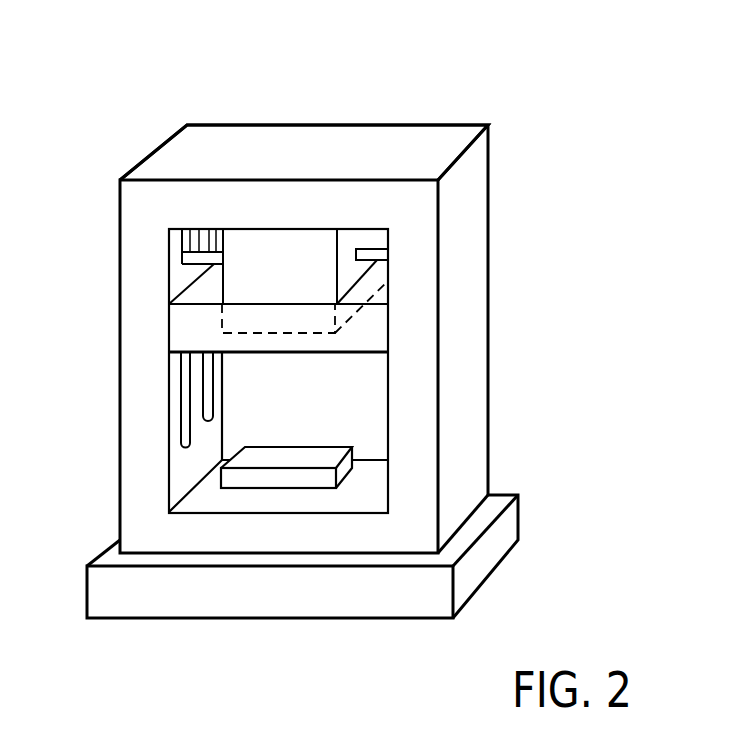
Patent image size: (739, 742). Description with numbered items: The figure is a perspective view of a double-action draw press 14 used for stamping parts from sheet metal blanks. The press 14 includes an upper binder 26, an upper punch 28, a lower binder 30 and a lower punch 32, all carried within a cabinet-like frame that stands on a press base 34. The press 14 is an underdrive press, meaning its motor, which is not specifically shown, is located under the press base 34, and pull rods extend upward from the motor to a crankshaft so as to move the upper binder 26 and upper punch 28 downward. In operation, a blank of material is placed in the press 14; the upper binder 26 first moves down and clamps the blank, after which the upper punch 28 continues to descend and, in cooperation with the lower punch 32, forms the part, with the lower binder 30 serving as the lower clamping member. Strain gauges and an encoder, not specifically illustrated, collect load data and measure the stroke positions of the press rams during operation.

The double-action draw press 14 is at (332, 105).
The upper binder 26 is at (182, 323).
The upper punch 28 is at (253, 248).
The lower binder 30 is at (222, 537).
The lower punch 32 is at (345, 447).
The press base 34 is at (333, 598).